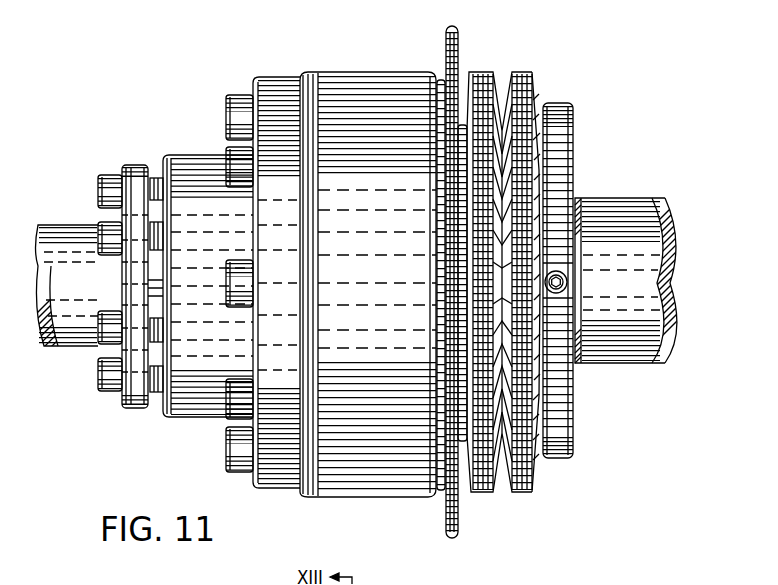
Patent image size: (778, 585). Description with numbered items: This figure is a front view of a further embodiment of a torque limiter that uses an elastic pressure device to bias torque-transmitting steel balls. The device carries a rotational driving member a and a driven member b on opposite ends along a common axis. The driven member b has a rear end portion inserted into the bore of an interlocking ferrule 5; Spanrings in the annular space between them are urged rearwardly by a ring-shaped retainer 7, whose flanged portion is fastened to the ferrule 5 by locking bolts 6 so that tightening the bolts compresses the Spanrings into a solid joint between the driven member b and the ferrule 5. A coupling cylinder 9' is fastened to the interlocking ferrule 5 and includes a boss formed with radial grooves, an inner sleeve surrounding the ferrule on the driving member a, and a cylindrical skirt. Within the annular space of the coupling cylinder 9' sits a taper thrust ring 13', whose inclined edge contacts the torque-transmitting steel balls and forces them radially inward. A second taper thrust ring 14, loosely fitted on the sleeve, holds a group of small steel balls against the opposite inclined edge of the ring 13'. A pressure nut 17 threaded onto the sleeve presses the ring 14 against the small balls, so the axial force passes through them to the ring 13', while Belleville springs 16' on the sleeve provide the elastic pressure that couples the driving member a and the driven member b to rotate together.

The driven member b is at (67, 247).
The locking bolts 6 is at (112, 185).
The ring-shaped retainer 7 is at (135, 182).
The interlocking ferrule 5 is at (200, 175).
The coupling cylinder 9' is at (335, 256).
The taper thrust ring 13' is at (420, 282).
The taper thrust ring 14 is at (460, 128).
The Belleville springs 16' is at (513, 255).
The pressure nut 17 is at (563, 137).
The rotational driving member a is at (622, 198).